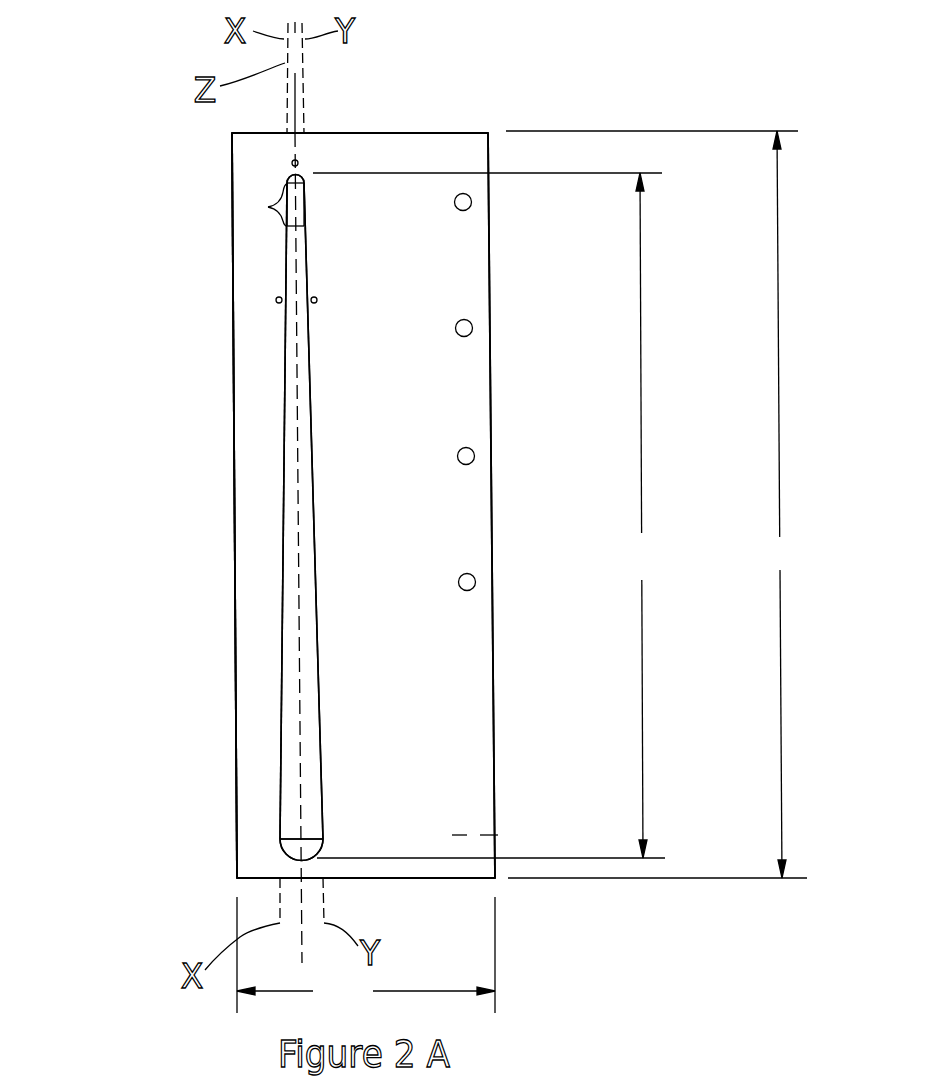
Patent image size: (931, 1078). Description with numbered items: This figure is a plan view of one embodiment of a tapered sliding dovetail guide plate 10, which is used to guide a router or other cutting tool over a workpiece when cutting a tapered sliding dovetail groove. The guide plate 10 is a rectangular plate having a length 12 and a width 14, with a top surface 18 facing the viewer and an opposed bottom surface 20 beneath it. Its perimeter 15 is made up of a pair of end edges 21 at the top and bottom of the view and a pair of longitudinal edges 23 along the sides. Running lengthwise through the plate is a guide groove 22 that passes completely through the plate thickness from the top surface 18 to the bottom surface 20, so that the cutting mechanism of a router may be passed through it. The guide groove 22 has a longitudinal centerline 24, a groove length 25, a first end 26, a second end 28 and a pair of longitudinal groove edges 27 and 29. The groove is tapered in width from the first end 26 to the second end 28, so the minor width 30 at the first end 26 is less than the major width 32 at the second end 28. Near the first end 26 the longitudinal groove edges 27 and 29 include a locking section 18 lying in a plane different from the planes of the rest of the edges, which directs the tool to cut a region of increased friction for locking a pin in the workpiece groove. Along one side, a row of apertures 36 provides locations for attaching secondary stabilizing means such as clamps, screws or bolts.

The guide plate 10 is at (508, 358).
The length 12 is at (656, 504).
The width 14 is at (366, 955).
The perimeter 15 is at (232, 333).
The top surface 18 is at (268, 207).
The bottom surface 20 is at (515, 822).
The end edges 21 is at (398, 132).
The guide groove 22 is at (343, 404).
The longitudinal edges 23 is at (233, 488).
The longitudinal centerline 24 is at (303, 121).
The groove length 25 is at (489, 515).
The first end 26 is at (272, 177).
The longitudinal groove edge 27 is at (282, 615).
The second end 28 is at (265, 849).
The longitudinal groove edge 29 is at (318, 658).
The minor width 30 is at (303, 186).
The major width 32 is at (303, 838).
The apertures 36 is at (470, 320).